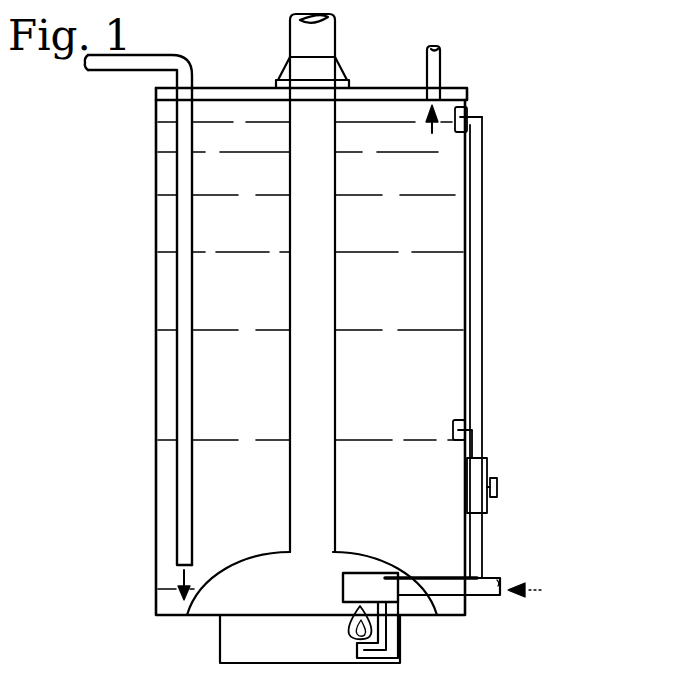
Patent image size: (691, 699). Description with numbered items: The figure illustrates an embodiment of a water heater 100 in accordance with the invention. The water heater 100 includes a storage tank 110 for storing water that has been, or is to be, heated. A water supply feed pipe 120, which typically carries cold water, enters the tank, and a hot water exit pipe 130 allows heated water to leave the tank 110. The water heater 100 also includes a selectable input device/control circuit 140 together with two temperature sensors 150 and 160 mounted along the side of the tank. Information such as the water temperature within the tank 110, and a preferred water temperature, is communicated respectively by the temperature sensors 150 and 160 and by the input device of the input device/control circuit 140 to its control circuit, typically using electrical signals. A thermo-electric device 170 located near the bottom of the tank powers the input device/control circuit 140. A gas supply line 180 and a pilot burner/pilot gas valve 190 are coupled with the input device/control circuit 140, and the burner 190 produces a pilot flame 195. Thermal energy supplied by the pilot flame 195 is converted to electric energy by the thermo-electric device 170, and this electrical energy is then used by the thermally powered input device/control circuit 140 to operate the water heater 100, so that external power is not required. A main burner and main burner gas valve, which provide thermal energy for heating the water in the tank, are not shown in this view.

The water heater 100 is at (556, 82).
The storage tank 110 is at (157, 268).
The water supply feed pipe 120 is at (126, 71).
The hot water exit pipe 130 is at (441, 74).
The selectable input device/control circuit 140 is at (498, 487).
The temperature sensor 150 is at (461, 418).
The temperature sensor 160 is at (460, 133).
The thermo-electric device 170 is at (350, 573).
The gas supply line 180 is at (478, 596).
The pilot burner/pilot gas valve 190 is at (376, 665).
The pilot flame 195 is at (353, 625).